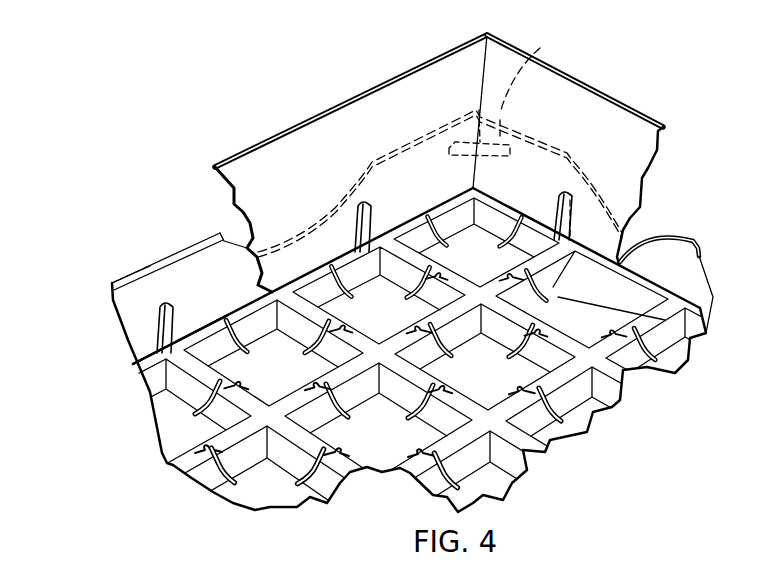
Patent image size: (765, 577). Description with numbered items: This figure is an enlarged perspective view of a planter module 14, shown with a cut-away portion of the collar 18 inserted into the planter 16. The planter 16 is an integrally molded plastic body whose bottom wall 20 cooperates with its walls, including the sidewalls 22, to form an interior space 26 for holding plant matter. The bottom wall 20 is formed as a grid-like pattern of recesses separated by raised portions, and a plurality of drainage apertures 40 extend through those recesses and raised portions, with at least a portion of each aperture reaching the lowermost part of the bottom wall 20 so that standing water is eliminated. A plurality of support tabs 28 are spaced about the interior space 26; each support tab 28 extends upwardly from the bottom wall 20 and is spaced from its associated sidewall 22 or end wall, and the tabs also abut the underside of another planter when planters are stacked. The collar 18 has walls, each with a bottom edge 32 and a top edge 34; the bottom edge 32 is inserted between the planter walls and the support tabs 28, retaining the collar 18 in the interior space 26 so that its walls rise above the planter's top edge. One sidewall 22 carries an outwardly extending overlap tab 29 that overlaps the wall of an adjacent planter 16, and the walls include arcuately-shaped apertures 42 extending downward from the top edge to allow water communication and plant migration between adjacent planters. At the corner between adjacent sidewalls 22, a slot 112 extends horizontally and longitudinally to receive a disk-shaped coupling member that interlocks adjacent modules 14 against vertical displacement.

The planter module 14 is at (102, 170).
The planter 16 is at (225, 232).
The collar 18 is at (240, 147).
The bottom wall 20 is at (420, 212).
The sidewall 22 is at (203, 286).
The interior space 26 is at (182, 292).
The support tab 28 is at (157, 337).
The overlap tab 29 is at (118, 280).
The bottom edge 32 is at (352, 248).
The top edge 34 is at (288, 131).
The drainage aperture 40 is at (236, 327).
The arcuately-shaped aperture 42 is at (211, 225).
The slot 112 is at (540, 48).